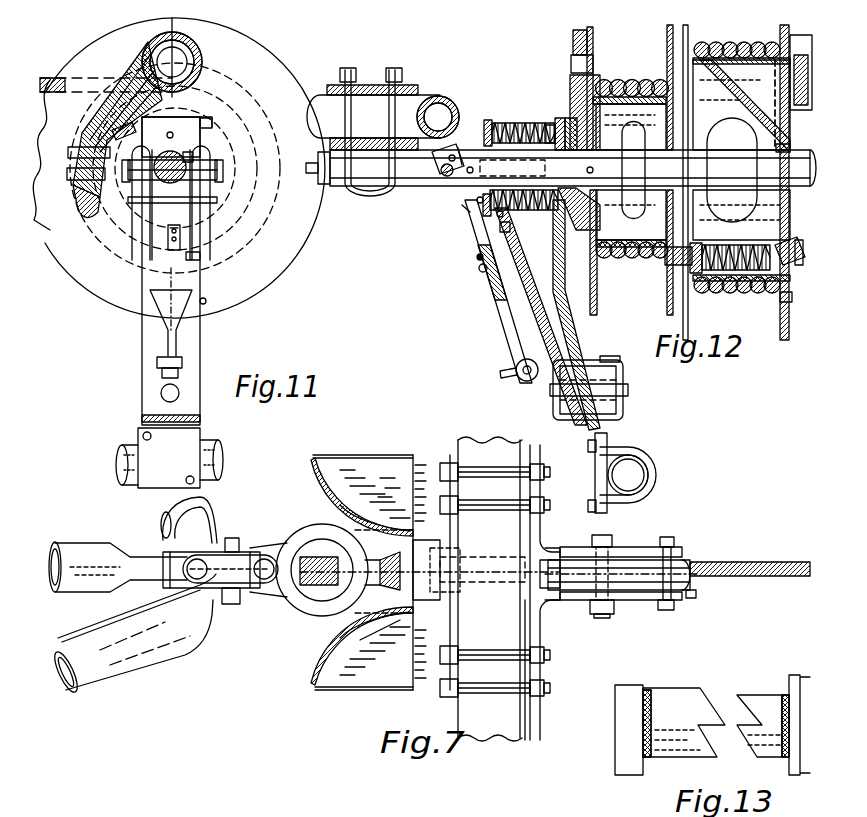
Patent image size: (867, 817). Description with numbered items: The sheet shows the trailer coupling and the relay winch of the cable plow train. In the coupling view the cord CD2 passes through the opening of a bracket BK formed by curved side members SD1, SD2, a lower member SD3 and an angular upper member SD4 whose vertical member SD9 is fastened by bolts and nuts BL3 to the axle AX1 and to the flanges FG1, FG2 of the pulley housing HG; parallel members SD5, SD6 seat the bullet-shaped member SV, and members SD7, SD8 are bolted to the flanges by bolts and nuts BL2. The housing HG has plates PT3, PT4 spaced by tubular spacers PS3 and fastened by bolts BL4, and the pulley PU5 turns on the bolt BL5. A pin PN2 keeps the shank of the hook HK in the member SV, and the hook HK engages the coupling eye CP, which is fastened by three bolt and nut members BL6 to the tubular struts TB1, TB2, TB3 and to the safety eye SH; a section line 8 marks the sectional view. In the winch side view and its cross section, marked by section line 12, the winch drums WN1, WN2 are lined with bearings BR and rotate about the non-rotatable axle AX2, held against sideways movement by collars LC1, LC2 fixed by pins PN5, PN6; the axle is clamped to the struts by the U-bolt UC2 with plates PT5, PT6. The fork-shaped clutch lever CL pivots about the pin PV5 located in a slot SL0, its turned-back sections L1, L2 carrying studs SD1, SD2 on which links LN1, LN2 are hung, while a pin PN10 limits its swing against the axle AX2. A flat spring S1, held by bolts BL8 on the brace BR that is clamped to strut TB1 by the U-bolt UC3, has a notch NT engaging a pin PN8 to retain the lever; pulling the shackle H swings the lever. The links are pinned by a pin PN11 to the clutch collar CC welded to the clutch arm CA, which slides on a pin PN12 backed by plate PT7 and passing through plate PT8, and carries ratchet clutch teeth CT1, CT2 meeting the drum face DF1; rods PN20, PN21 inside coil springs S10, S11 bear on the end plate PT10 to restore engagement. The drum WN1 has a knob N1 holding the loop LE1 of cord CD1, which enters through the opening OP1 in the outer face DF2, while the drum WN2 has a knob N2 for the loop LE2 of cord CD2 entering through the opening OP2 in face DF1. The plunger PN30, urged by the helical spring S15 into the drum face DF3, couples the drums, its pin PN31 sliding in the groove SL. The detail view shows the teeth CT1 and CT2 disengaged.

In FIG. 11, the protruding knob N2 is at (150, 58).
In FIG. 12, the protruding knob N2 is at (572, 45).
In FIG. 11, the loop LE2 is at (125, 95).
In FIG. 12, the loop LE2 is at (571, 62).
In FIG. 11, the section line 12 is at (186, 350).
In FIG. 11, the drum face DF1 is at (206, 114).
In FIG. 12, the drum face DF1 is at (597, 305).
In FIG. 13, the drum face DF1 is at (795, 690).
In FIG. 11, the rod PN21 is at (174, 132).
In FIG. 12, the rod PN21 is at (456, 156).
In FIG. 11, the end plate PT10 is at (214, 120).
In FIG. 12, the end plate PT10 is at (452, 185).
In FIG. 11, the axle AX2 is at (186, 158).
In FIG. 12, the axle AX2 is at (732, 170).
In FIG. 11, the pivot pin PV5 is at (193, 157).
In FIG. 12, the pivot pin PV5 is at (441, 177).
In FIG. 11, the turned-back section L2 is at (170, 118).
In FIG. 11, the turned-back section L1 is at (208, 150).
In FIG. 11, the pin PN10 is at (215, 205).
In FIG. 12, the pin PN10 is at (478, 203).
In FIG. 11, the side member SD1 is at (214, 174).
In FIG. 7, the side member SD1 is at (320, 664).
In FIG. 11, the link LN1 is at (223, 176).
In FIG. 11, the link LN2 is at (127, 185).
In FIG. 12, the link LN2 is at (460, 148).
In FIG. 11, the flat spring S1 is at (181, 245).
In FIG. 12, the flat spring S1 is at (500, 265).
In FIG. 11, the side member SD2 is at (186, 258).
In FIG. 7, the side member SD2 is at (325, 466).
In FIG. 11, the pin PN8 is at (206, 301).
In FIG. 12, the pin PN8 is at (482, 272).
In FIG. 11, the opening OP2 is at (88, 235).
In FIG. 11, the cord CD2 is at (112, 255).
In FIG. 12, the cord CD2 is at (626, 80).
In FIG. 7, the cord CD2 is at (765, 565).
In FIG. 11, the clutch lever CL is at (186, 336).
In FIG. 12, the clutch lever CL is at (513, 350).
In FIG. 11, the brace BR is at (148, 452).
In FIG. 12, the brace BR is at (608, 470).
In FIG. 11, the shackle H is at (184, 367).
In FIG. 12, the shackle H is at (498, 374).
In FIG. 11, the pin PN12 is at (162, 392).
In FIG. 12, the pin PN12 is at (628, 392).
In FIG. 11, the plate PT7 is at (146, 406).
In FIG. 12, the plate PT7 is at (556, 405).
In FIG. 11, the U-bolt arrangement UC3 is at (143, 436).
In FIG. 12, the U-bolt arrangement UC3 is at (646, 452).
In FIG. 11, the tubular strut TB1 is at (212, 448).
In FIG. 12, the tubular strut TB1 is at (652, 477).
In FIG. 7, the tubular strut TB1 is at (82, 543).
In FIG. 12, the U-shaped bolt UC2 is at (347, 68).
In FIG. 12, the plate PT5 is at (372, 85).
In FIG. 12, the tubular strut TB3 is at (444, 100).
In FIG. 7, the tubular strut TB3 is at (200, 510).
In FIG. 12, the plate PT6 is at (367, 138).
In FIG. 12, the pin PN5 is at (790, 170).
In FIG. 12, the pin PN11 is at (506, 171).
In FIG. 12, the pin PN6 is at (588, 170).
In FIG. 12, the coil spring S11 is at (520, 123).
In FIG. 12, the clutch collar CC is at (548, 125).
In FIG. 12, the clutch tooth CT2 is at (562, 118).
In FIG. 13, the clutch tooth CT2 is at (745, 695).
In FIG. 12, the clutch tooth CT1 is at (568, 134).
In FIG. 13, the clutch tooth CT1 is at (700, 708).
In FIG. 12, the coil spring S10 is at (522, 209).
In FIG. 12, the collar LC2 is at (598, 200).
In FIG. 12, the winch drum WN2 is at (612, 258).
In FIG. 12, the drum face DF3 is at (672, 308).
In FIG. 12, the cord CD1 is at (716, 44).
In FIG. 12, the outer drum face DF2 is at (788, 330).
In FIG. 12, the loop LE1 is at (798, 45).
In FIG. 12, the protruding knob N1 is at (800, 70).
In FIG. 12, the opening OP1 is at (785, 125).
In FIG. 12, the collar LC1 is at (796, 140).
In FIG. 12, the helical spring S15 is at (730, 246).
In FIG. 12, the groove SL is at (760, 290).
In FIG. 12, the winch drum WN1 is at (715, 293).
In FIG. 12, the pin PN31 is at (780, 250).
In FIG. 12, the plunger PN30 is at (788, 302).
In FIG. 12, the clutch arm CA is at (585, 336).
In FIG. 13, the clutch arm CA is at (616, 760).
In FIG. 12, the notch NT is at (478, 259).
In FIG. 12, the bolt members BL8 is at (510, 227).
In FIG. 12, the rod PN20 is at (497, 216).
In FIG. 12, the slot SL0 is at (464, 208).
In FIG. 12, the plate PT8 is at (618, 364).
In FIG. 7, the safety eye member SH is at (214, 592).
In FIG. 7, the bolt and nut members BL6 is at (233, 606).
In FIG. 7, the tubular strut TB2 is at (146, 660).
In FIG. 7, the hook HK is at (292, 542).
In FIG. 7, the coupling eye member CP is at (312, 552).
In FIG. 7, the section line 8 is at (730, 583).
In FIG. 7, the bracket BK is at (362, 561).
In FIG. 7, the parallel member SD6 is at (400, 527).
In FIG. 7, the lower member SD3 is at (333, 610).
In FIG. 7, the parallel member SD5 is at (405, 633).
In FIG. 7, the upper member SD4 is at (428, 455).
In FIG. 7, the vertical member SD9 is at (450, 695).
In FIG. 7, the member SD8 is at (508, 524).
In FIG. 7, the pin PN2 is at (452, 592).
In FIG. 7, the axle AX1 is at (514, 715).
In FIG. 7, the bolts and nuts BL3 is at (470, 690).
In FIG. 7, the bolts and nuts BL2 is at (512, 693).
In FIG. 7, the flange FG2 is at (541, 490).
In FIG. 7, the flange FG1 is at (541, 668).
In FIG. 7, the member SD7 is at (526, 696).
In FIG. 7, the bullet-shaped member SV is at (537, 604).
In FIG. 7, the pulley housing HG is at (634, 567).
In FIG. 7, the plate PT3 is at (625, 547).
In FIG. 7, the plate PT4 is at (642, 600).
In FIG. 7, the pulley PU5 is at (650, 560).
In FIG. 7, the bolt and nut member BL5 is at (598, 617).
In FIG. 7, the bolt and nut members BL4 is at (668, 612).
In FIG. 7, the tubular spacers PS3 is at (690, 598).